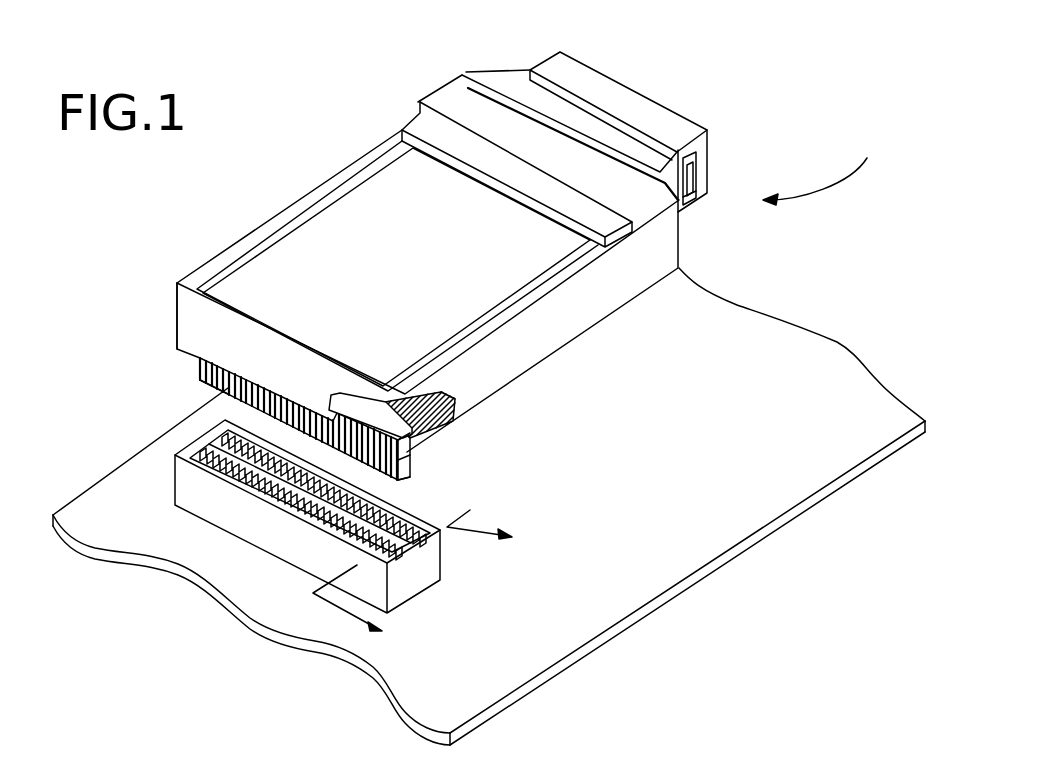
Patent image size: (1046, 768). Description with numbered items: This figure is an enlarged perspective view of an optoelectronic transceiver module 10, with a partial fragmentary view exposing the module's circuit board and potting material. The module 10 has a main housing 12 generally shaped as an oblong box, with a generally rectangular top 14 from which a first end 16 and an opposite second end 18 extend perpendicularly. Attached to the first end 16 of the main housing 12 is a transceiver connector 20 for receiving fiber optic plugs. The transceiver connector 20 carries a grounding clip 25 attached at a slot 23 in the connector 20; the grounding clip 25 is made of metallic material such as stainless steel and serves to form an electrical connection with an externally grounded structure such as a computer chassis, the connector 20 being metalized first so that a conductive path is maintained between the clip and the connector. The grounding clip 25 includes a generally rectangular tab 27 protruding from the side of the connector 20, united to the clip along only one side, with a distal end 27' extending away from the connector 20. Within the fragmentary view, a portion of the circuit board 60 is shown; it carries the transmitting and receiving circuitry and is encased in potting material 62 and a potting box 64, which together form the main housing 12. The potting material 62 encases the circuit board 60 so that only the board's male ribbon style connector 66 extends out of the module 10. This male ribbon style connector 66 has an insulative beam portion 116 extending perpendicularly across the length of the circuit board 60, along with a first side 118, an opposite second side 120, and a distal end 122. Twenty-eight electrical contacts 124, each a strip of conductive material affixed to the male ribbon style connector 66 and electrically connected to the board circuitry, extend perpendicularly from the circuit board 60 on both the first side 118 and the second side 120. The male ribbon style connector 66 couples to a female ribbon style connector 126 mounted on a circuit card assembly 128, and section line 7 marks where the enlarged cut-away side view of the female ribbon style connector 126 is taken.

The optoelectronic transceiver module 10 is at (829, 168).
The main housing 12 is at (300, 205).
The top 14 is at (420, 245).
The first end 16 is at (502, 90).
The second end 18 is at (202, 317).
The transceiver connector 20 is at (673, 123).
The slot 23 is at (570, 93).
The grounding clip 25 is at (605, 128).
The tab 27 is at (744, 152).
The distal end 27' is at (716, 235).
The circuit board 60 is at (352, 405).
The potting material 62 is at (415, 404).
The potting box 64 is at (452, 396).
The male ribbon style connector 66 is at (198, 368).
The beam portion 116 is at (408, 462).
The first side 118 is at (365, 479).
The second side 120 is at (405, 440).
The distal end 122 is at (200, 393).
The electrical contacts 124 is at (233, 377).
The female ribbon style connector 126 is at (223, 512).
The circuit card assembly 128 is at (678, 492).
The line 7- 7 is at (422, 582).